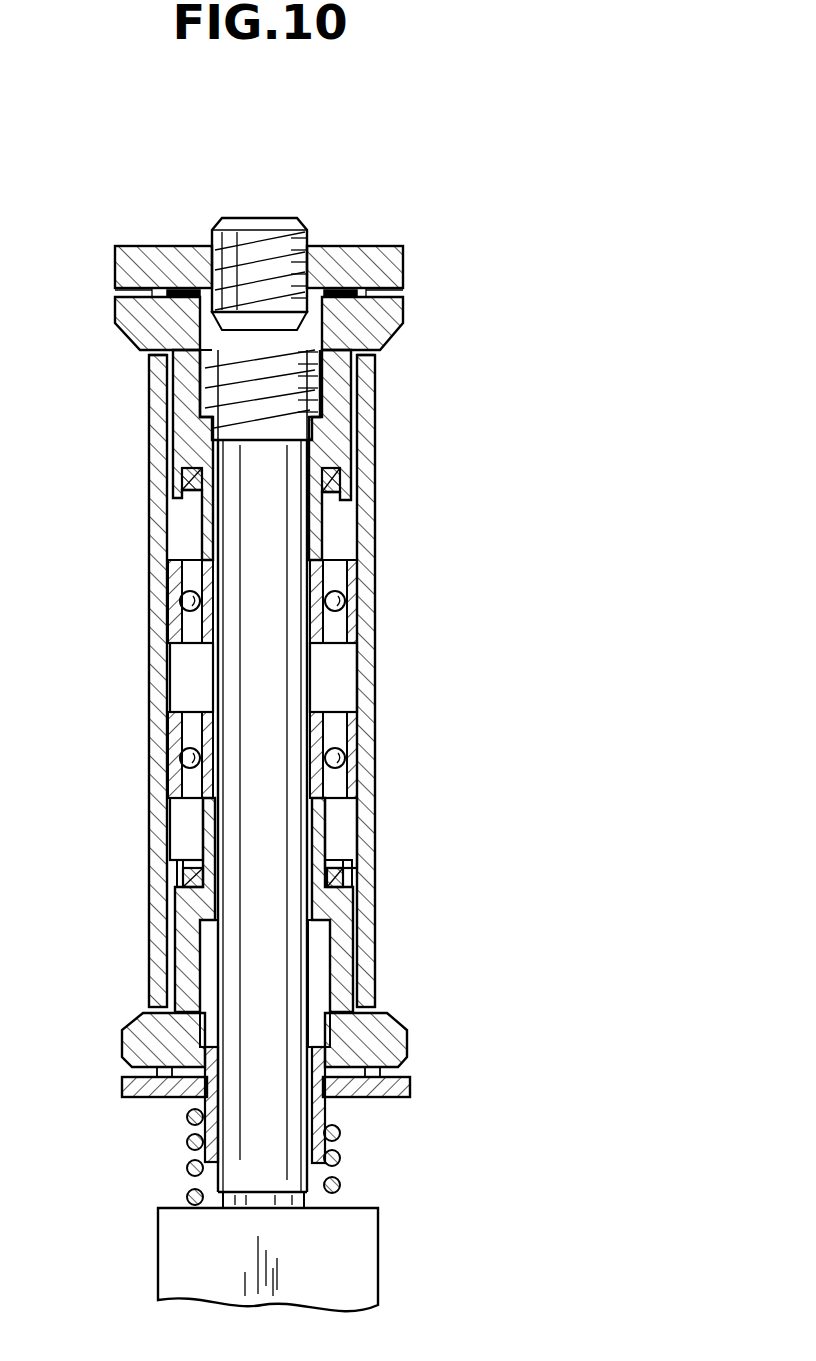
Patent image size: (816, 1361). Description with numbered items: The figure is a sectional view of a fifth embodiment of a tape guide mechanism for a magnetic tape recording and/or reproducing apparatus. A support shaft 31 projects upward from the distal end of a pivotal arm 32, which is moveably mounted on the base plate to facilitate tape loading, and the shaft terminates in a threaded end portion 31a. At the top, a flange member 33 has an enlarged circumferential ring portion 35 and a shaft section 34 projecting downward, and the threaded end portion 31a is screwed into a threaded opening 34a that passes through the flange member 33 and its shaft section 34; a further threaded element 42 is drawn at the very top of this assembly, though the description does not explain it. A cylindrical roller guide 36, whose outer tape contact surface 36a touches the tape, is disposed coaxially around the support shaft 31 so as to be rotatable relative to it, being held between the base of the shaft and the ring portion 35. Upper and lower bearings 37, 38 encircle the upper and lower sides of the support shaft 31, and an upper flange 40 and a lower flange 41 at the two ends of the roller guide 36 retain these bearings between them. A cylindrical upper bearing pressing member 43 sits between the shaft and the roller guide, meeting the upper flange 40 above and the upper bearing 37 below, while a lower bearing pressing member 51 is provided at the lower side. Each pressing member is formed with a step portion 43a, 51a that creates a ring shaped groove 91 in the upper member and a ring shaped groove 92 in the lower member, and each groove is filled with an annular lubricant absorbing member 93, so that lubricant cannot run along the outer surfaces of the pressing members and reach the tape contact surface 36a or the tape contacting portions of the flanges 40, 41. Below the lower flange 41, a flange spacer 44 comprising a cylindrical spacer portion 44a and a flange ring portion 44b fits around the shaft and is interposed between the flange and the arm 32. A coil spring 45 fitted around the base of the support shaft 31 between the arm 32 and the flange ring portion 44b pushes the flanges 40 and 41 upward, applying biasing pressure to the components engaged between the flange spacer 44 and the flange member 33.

The support shaft 31 is at (290, 676).
The threaded end portion 31a is at (220, 402).
The pivotal arm 32 is at (165, 1268).
The flange member 33 is at (416, 268).
The shaft section 34 is at (316, 332).
The threaded opening 34a is at (208, 347).
The ring portion 35 is at (353, 258).
The cylindrical roller guide 36 is at (121, 604).
The outer tape contact surface 36a is at (150, 665).
The upper bearing 37 is at (350, 588).
The lower bearing 38 is at (352, 757).
The upper flange 40 is at (122, 330).
The lower flange 41 is at (135, 1042).
The nut 42 is at (263, 240).
The upper bearing pressing member 43 is at (336, 398).
The step portion 43a is at (336, 493).
The flange spacer 44 is at (160, 1109).
The cylindrical spacer portion 44a is at (196, 1160).
The flange ring portion 44b is at (395, 1090).
The coil spring 45 is at (338, 1162).
The lower bearing pressing member 51 is at (344, 952).
The step portion 51a is at (341, 866).
The ring shaped groove 91 is at (181, 477).
The ring shaped groove 92 is at (182, 862).
The annular lubricant absorbing member 93 is at (340, 486).